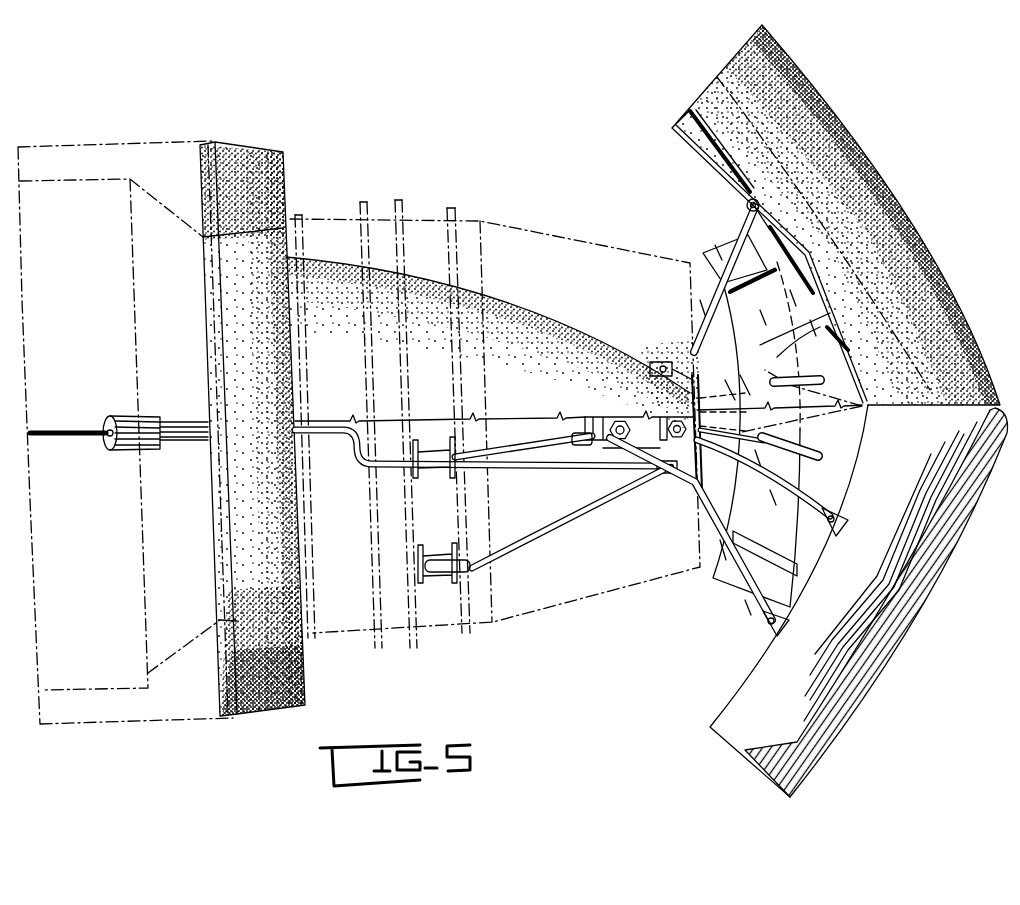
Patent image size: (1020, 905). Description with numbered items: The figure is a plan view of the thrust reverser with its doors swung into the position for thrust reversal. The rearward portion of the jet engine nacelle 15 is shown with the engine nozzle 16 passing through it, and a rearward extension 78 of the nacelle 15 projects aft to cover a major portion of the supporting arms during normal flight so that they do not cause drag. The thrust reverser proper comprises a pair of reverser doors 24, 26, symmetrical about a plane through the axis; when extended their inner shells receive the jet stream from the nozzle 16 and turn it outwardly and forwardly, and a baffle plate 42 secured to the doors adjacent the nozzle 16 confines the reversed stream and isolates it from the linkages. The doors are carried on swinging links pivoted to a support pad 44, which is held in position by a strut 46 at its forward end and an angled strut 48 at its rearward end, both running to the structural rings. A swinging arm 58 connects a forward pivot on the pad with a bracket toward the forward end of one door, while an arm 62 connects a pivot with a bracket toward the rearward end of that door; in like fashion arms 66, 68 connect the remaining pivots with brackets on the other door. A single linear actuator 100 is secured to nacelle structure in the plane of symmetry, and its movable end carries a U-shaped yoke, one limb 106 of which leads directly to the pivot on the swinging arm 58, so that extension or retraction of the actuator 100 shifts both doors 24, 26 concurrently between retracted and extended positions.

The jet engine nacelle 15 is at (163, 727).
The nozzle 16 is at (697, 568).
The reverser door 24 is at (905, 241).
The reverser door 26 is at (915, 595).
The baffle plate 42 is at (806, 467).
The support pad 44 is at (581, 418).
The strut 46 is at (527, 450).
The strut 48 is at (537, 528).
The swinging arm 58 is at (707, 514).
The arm 62 is at (815, 508).
The arm 66 is at (707, 318).
The arm 68 is at (769, 388).
The rearward extension 78 is at (493, 343).
The actuator 100 is at (140, 416).
The yoke limb 106 is at (340, 453).